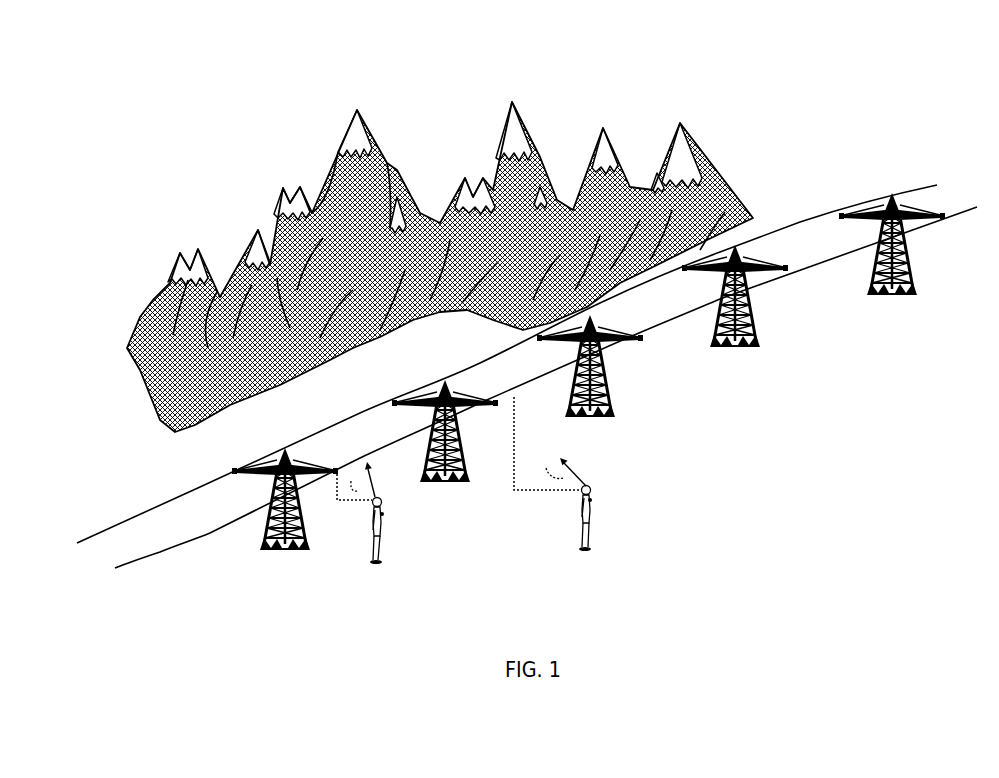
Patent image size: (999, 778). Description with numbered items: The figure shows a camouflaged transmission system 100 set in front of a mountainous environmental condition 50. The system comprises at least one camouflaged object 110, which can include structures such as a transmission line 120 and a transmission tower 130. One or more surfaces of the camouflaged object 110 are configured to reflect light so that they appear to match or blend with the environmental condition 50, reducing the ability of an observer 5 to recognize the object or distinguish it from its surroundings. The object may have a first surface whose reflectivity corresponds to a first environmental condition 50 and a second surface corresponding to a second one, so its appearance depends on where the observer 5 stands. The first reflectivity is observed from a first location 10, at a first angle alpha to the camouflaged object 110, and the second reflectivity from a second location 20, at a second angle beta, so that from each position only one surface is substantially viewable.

The observer 5 is at (382, 514).
The first location 10 is at (602, 553).
The second location 20 is at (392, 571).
The environmental condition 50 is at (450, 121).
The camouflaged transmission system 100 is at (803, 130).
The camouflaged object 110 is at (867, 186).
The transmission line 120 is at (665, 323).
The transmission tower 130 is at (762, 330).